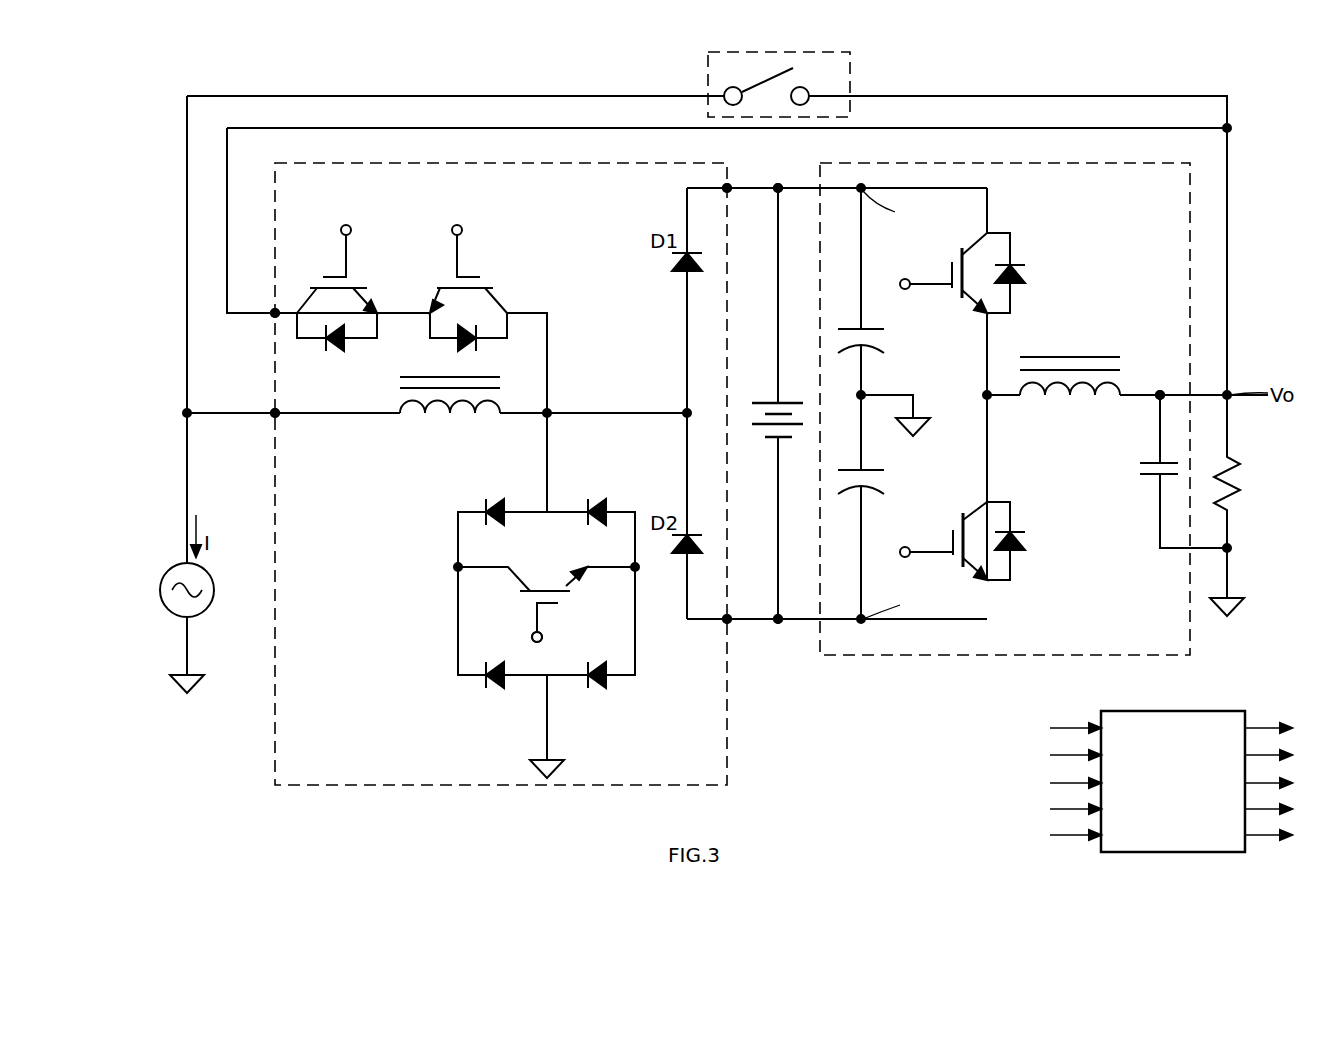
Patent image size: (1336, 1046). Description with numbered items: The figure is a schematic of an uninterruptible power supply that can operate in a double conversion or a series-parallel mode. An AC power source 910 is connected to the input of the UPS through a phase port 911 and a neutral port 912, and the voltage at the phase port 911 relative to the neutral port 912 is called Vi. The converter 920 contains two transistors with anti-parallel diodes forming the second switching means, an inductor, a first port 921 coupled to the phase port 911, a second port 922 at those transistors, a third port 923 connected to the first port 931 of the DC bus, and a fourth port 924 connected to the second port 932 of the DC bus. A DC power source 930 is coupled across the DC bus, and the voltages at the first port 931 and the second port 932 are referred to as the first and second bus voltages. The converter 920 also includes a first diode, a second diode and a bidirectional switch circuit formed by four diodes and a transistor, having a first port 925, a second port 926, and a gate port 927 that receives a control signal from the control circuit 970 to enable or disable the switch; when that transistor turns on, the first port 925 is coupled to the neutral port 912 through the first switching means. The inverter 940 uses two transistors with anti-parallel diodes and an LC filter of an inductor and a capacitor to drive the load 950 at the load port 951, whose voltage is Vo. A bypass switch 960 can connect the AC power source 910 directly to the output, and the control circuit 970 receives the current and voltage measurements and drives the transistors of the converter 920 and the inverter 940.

The AC power source 910 is at (160, 594).
The phase port 911 is at (187, 452).
The neutral port 912 is at (187, 648).
The converter 920 is at (275, 745).
The first port 921 is at (278, 416).
The second port 922 is at (275, 316).
The third port 923 is at (730, 186).
The fourth port 924 is at (730, 622).
The first port of bidirectional switch circuit 925 is at (549, 447).
The second port of bidirectional switch circuit 926 is at (548, 715).
The gate port 927 is at (530, 634).
The DC power source 930 is at (765, 400).
The first port of DC bus 931 is at (780, 186).
The second port of DC bus 932 is at (780, 622).
The inverter 940 is at (945, 657).
The load 950 is at (1240, 488).
The load port 951 is at (1158, 393).
The bypass switch 960 is at (852, 72).
The control circuit 970 is at (1222, 711).